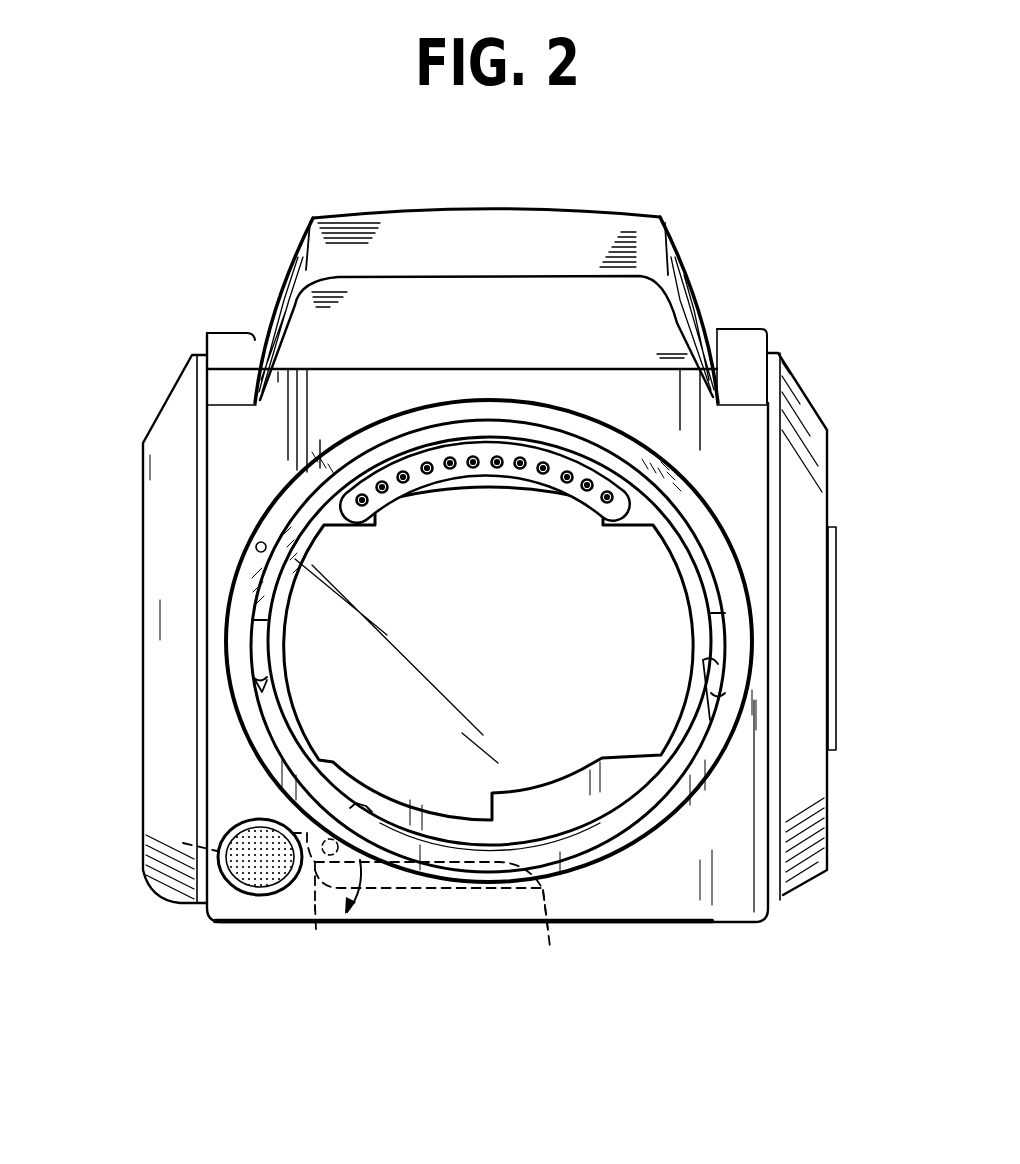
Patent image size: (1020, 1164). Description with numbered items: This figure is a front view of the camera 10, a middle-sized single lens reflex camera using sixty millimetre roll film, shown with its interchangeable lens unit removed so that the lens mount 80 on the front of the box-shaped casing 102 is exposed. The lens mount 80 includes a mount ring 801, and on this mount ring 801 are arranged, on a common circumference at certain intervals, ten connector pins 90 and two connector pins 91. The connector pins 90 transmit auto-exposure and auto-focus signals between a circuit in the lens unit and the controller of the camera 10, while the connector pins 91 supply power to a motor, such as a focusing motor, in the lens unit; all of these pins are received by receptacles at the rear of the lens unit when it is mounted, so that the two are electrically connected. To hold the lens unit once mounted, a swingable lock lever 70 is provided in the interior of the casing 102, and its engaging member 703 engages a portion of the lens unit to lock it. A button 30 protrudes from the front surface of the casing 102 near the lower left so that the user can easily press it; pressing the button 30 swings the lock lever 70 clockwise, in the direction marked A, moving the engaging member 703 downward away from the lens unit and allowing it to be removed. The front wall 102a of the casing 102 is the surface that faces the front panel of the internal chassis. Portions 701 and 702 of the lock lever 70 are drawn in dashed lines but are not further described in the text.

The camera 10 is at (760, 310).
The button 30 is at (243, 877).
The lock lever 70 is at (444, 890).
The grip portion 701 is at (316, 930).
The grip portion 702 is at (183, 843).
The engaging member 703 is at (548, 930).
The lens mount 80 is at (690, 487).
The mount ring 801 is at (630, 518).
The connector pins 90 is at (383, 495).
The connector pins 91 is at (496, 470).
The casing 102 is at (735, 812).
The front wall 102a is at (687, 868).